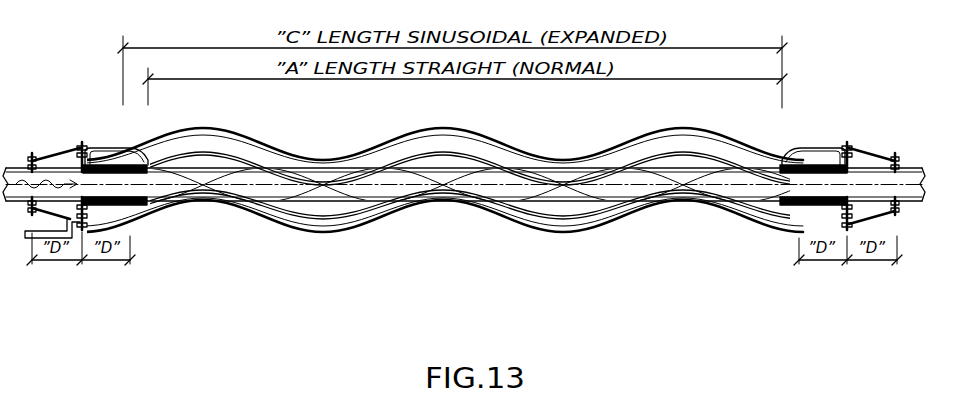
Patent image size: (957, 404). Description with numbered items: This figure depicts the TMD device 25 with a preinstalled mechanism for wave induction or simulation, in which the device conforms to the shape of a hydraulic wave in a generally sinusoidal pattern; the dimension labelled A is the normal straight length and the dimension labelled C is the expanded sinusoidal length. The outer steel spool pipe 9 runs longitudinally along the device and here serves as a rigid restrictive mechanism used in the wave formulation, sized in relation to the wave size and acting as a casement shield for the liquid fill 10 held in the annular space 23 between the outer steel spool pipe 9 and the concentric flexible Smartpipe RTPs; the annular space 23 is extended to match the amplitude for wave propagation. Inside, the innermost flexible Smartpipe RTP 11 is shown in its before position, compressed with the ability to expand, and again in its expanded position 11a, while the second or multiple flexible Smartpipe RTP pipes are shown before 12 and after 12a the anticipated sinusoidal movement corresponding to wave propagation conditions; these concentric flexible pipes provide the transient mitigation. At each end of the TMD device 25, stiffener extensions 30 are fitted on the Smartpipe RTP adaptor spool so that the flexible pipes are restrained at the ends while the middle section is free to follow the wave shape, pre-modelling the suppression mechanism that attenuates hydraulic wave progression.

The outer steel spool pipe 9 is at (273, 140).
The liquid fill 10 is at (307, 223).
The innermost flexible Smartpipe RTP 11 is at (623, 205).
The first flexible Smartpipe RTP pipe in expanded position 11a is at (643, 160).
The second flexible Smartpipe RTP pipe 12 is at (565, 203).
The second flexible Smartpipe RTP pipe after sinusoidal movement 12a is at (540, 180).
The annular space 23 is at (147, 213).
The TMD device 25 is at (545, 246).
The stiffener extensions 30 is at (110, 160).